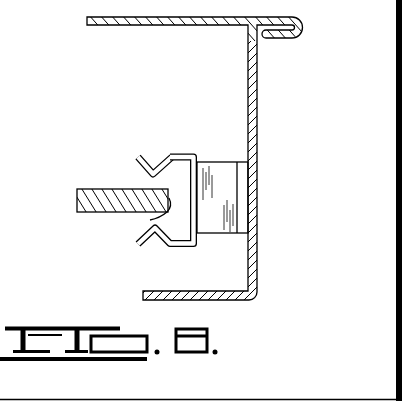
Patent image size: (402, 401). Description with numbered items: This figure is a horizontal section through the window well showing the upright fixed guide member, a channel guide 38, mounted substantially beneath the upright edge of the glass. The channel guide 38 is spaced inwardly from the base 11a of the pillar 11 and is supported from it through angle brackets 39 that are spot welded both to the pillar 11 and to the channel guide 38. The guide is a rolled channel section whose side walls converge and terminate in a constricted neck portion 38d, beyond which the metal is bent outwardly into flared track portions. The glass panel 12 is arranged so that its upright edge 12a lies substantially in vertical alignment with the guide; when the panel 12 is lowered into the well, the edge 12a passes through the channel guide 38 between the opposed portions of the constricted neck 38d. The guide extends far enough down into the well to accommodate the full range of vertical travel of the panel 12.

The pillar 11 is at (258, 99).
The base of the pillar 11a is at (246, 241).
The glass panel 12 is at (107, 183).
The upright edge of the glass 12a is at (135, 228).
The channel guide 38 is at (173, 176).
The constricted neck portion 38d is at (150, 174).
The angle brackets 39 is at (215, 234).